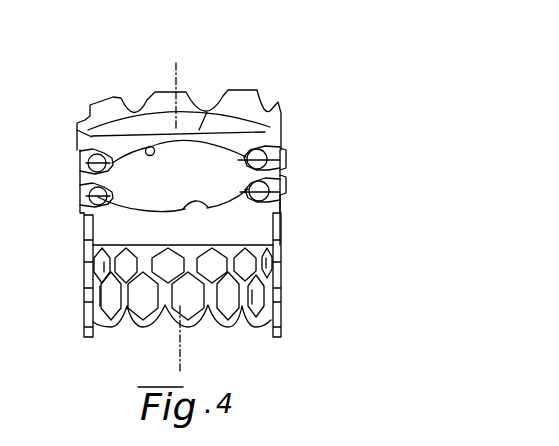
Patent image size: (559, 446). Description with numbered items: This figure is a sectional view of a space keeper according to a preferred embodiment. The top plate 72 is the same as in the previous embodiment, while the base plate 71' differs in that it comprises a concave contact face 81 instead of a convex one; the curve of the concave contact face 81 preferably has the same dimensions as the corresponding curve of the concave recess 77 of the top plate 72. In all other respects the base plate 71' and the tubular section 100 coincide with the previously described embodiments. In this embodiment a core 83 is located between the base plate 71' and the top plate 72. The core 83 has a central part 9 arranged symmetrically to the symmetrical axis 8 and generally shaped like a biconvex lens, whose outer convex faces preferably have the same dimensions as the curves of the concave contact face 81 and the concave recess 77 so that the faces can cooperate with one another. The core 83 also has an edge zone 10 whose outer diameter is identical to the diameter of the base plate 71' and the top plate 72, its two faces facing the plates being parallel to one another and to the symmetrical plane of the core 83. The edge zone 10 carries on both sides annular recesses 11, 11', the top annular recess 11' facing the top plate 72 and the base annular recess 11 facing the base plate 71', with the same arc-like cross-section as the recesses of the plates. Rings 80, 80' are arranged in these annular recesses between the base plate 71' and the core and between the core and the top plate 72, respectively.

The symmetrical axis 8 is at (176, 68).
The central part 9 is at (135, 180).
The edge zone 10 is at (281, 172).
The base annular recess 11 is at (316, 181).
The top annular recess 11' is at (320, 149).
The base plate 71' is at (325, 201).
The top plate 72 is at (281, 133).
The concave recess 77 is at (146, 152).
The ring 80 is at (60, 205).
The ring 80' is at (58, 167).
The concave contact face 81 is at (212, 208).
The core 83 is at (187, 184).
The tubular section 100 is at (293, 288).